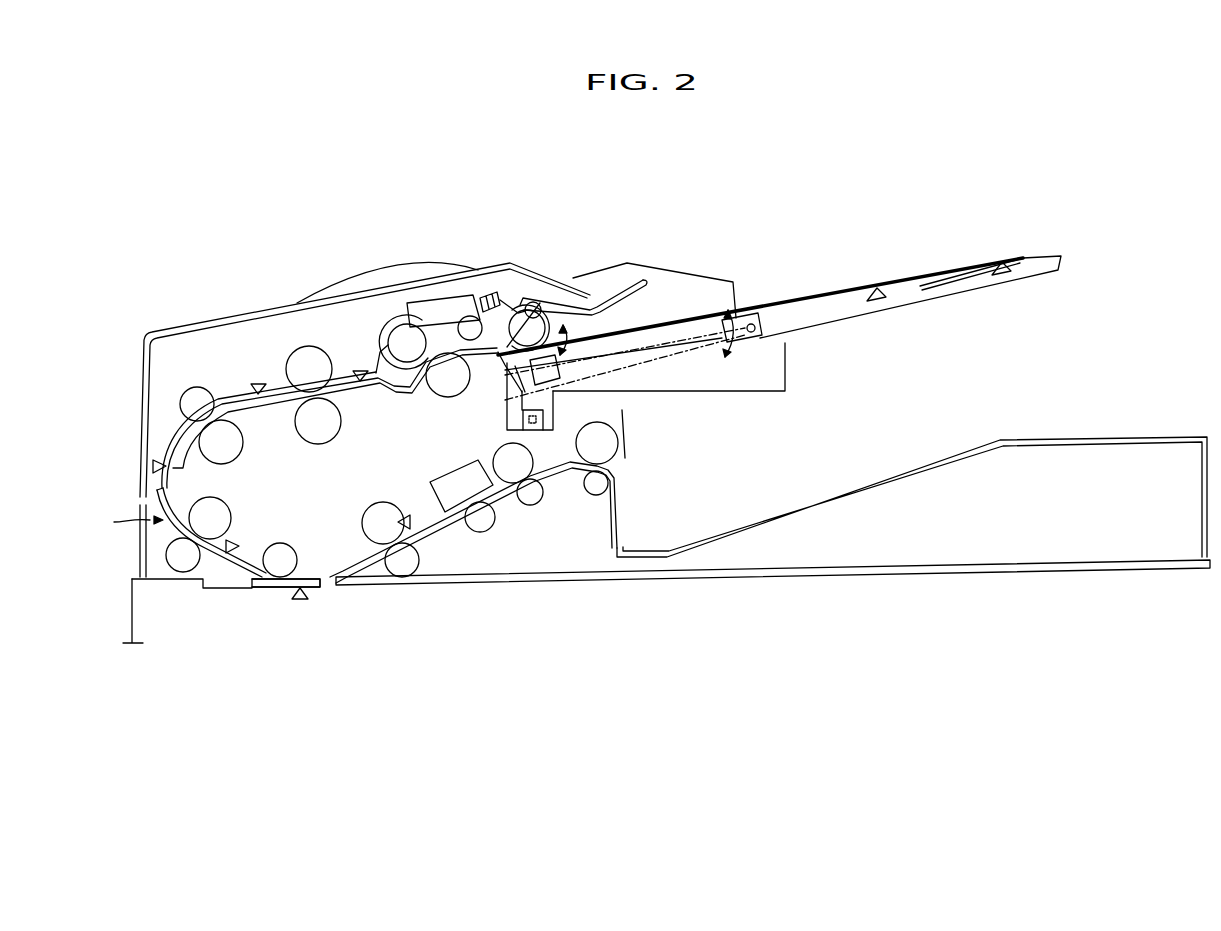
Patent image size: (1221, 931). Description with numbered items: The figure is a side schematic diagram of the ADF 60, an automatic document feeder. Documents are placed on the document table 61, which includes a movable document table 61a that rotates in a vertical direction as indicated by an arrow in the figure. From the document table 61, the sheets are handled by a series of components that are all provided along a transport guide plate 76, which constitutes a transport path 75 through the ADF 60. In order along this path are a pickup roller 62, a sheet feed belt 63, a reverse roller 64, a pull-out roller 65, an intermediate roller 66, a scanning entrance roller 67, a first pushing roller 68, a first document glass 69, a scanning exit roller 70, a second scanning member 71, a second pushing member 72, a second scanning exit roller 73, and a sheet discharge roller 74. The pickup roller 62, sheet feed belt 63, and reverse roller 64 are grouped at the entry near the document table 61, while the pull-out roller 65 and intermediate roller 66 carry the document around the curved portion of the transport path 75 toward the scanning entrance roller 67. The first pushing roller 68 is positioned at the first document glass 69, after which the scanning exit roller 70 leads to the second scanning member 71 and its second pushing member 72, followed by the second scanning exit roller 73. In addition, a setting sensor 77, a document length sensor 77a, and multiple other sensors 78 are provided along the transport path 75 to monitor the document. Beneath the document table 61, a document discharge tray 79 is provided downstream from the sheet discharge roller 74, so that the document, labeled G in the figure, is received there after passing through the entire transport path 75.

The ADF 60 is at (806, 168).
The document table 61 is at (808, 297).
The movable document table 61a is at (660, 330).
The pickup roller 62 is at (518, 305).
The sheet feed belt 63 is at (432, 300).
The reverse roller 64 is at (432, 396).
The pull-out roller 65 is at (304, 350).
The intermediate roller 66 is at (199, 388).
The scanning entrance roller 67 is at (172, 573).
The first pushing roller 68 is at (287, 548).
The first document glass 69 is at (266, 592).
The scanning exit roller 70 is at (362, 512).
The second scanning member 71 is at (455, 470).
The second pushing member 72 is at (494, 528).
The second scanning exit roller 73 is at (500, 450).
The sheet discharge roller 74 is at (621, 438).
The transport path 75 is at (125, 522).
The transport guide plate 76 is at (178, 533).
The setting sensor 77 is at (577, 336).
The document length sensor 77a is at (884, 302).
The sensors 78 is at (258, 382).
The document discharge tray 79 is at (840, 490).
The document G is at (974, 272).